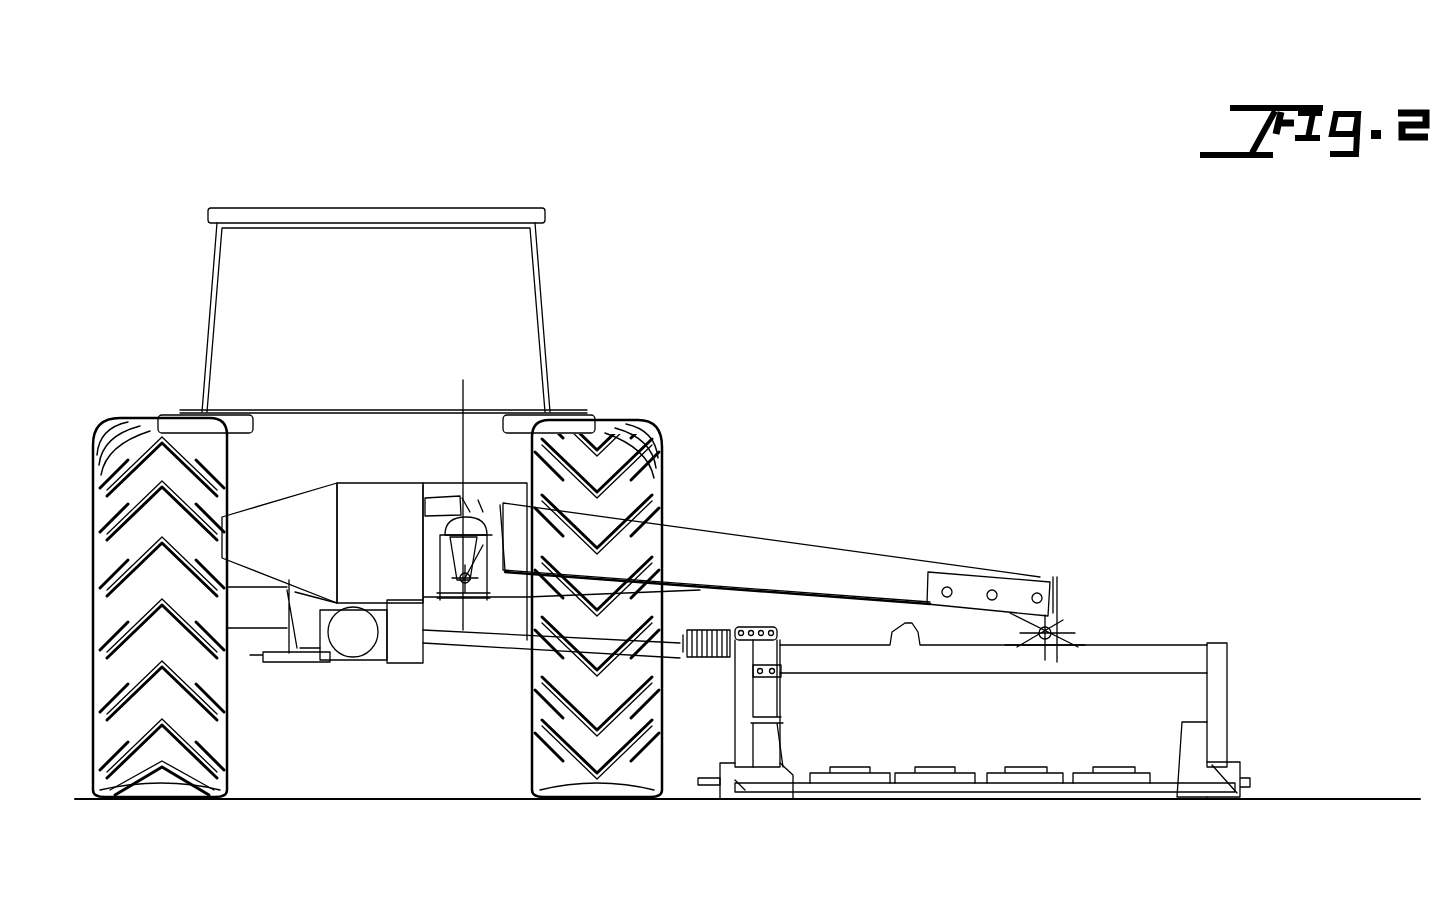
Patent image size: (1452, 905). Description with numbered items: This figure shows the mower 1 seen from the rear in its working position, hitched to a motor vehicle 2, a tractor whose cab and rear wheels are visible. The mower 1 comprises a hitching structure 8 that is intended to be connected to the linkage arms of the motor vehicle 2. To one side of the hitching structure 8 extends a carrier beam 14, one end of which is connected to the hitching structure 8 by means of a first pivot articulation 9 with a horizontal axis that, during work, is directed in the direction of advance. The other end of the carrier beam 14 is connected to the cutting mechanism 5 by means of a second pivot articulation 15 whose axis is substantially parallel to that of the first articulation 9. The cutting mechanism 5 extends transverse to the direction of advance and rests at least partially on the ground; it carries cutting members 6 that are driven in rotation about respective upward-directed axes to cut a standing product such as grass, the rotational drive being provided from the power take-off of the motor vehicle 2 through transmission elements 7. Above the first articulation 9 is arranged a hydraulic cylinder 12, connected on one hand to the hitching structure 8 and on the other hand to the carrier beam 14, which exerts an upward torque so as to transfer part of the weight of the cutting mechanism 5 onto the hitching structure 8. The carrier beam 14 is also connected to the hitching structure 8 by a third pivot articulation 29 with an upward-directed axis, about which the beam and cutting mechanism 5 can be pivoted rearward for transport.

The mower 1 is at (771, 491).
The motor vehicle 2 is at (200, 197).
The cutting mechanism 5 is at (1235, 638).
The cutting members 6 is at (1091, 764).
The transmission elements 7 is at (348, 665).
The hitching structure 8 is at (359, 478).
The first pivot articulation 9 is at (470, 593).
The hydraulic cylinder 12 is at (440, 495).
The carrier beam 14 is at (880, 548).
The second pivot articulation 15 is at (1057, 627).
The third pivot articulation 29 is at (458, 388).